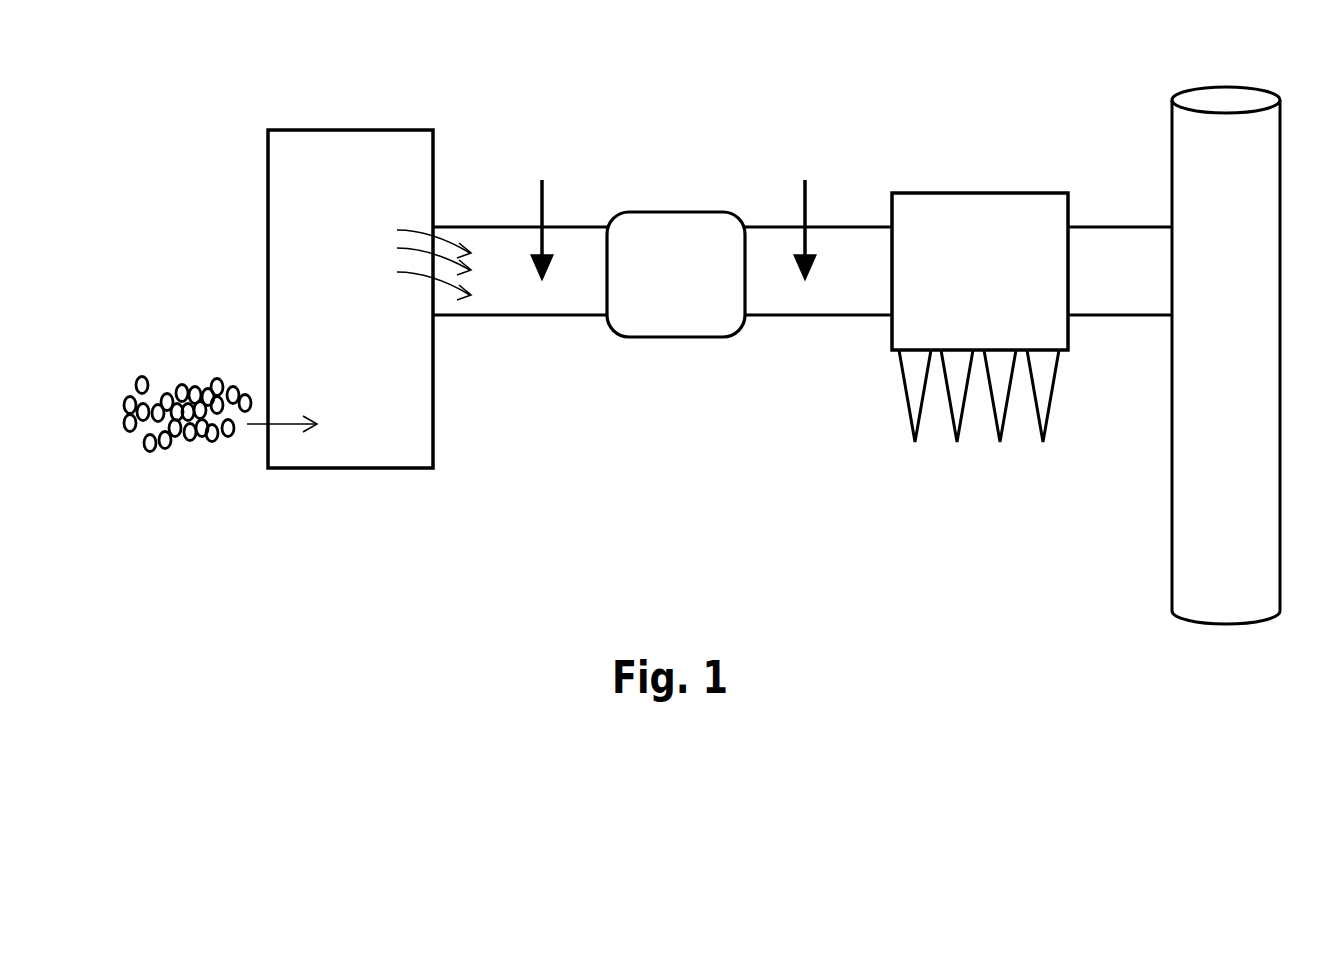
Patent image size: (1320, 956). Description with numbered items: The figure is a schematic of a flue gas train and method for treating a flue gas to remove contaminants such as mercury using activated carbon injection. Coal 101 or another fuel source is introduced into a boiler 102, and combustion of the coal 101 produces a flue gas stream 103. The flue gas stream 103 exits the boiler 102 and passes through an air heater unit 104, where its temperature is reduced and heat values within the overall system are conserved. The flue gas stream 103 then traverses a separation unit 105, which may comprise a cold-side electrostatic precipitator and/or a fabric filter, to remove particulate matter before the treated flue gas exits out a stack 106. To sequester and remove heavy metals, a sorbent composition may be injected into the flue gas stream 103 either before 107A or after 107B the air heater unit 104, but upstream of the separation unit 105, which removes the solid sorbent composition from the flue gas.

The coal 101 is at (182, 383).
The boiler 102 is at (350, 299).
The flue gas stream 103 is at (443, 250).
The air heater unit 104 is at (676, 274).
The separation unit 105 is at (980, 317).
The stack 106 is at (1226, 355).
The sorbent injection point before the air heater unit 107A is at (539, 202).
The sorbent injection point after the air heater unit 107B is at (806, 204).